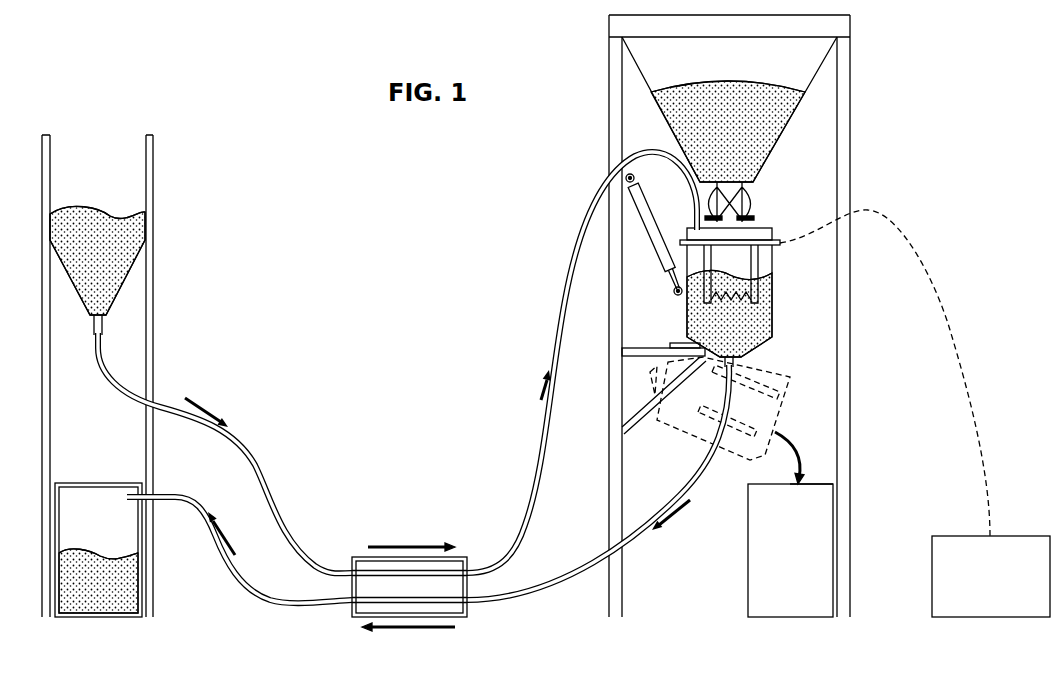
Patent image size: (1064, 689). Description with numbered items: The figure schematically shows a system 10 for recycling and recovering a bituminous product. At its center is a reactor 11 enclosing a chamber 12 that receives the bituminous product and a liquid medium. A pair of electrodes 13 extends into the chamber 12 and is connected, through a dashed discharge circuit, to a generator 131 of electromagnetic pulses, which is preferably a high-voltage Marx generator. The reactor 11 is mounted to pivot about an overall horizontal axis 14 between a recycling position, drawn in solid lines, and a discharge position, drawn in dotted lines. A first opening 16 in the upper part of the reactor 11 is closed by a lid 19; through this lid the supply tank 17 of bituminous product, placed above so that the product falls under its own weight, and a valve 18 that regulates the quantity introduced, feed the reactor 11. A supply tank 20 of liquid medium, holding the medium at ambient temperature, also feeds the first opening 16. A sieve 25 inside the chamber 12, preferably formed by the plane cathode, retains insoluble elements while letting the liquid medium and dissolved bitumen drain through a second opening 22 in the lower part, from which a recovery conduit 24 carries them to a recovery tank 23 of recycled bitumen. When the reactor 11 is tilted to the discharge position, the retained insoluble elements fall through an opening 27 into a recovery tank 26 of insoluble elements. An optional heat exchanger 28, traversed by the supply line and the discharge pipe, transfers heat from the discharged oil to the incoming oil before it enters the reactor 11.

The system 10 is at (964, 200).
The reactor 11 is at (778, 291).
The chamber 12 is at (690, 315).
The pair of electrodes 13 is at (688, 240).
The horizontal axis 14 is at (684, 342).
The first opening 16 is at (732, 238).
The supply tank of bituminous product 17 is at (640, 70).
The valve 18 is at (715, 190).
The lid 19 is at (730, 222).
The supply tank of liquid medium 20 is at (73, 285).
The second opening 22 is at (742, 365).
The recovery tank of recycled bitumen 23 is at (95, 626).
The recovery conduit 24 is at (237, 597).
The sieve 25 is at (753, 336).
The recovery tank of insoluble elements 26 is at (790, 550).
The opening 27 is at (812, 484).
The heat exchanger 28 is at (474, 610).
The generator 131 is at (991, 576).